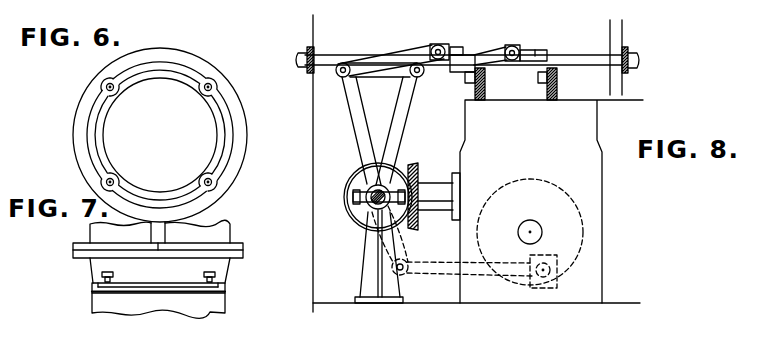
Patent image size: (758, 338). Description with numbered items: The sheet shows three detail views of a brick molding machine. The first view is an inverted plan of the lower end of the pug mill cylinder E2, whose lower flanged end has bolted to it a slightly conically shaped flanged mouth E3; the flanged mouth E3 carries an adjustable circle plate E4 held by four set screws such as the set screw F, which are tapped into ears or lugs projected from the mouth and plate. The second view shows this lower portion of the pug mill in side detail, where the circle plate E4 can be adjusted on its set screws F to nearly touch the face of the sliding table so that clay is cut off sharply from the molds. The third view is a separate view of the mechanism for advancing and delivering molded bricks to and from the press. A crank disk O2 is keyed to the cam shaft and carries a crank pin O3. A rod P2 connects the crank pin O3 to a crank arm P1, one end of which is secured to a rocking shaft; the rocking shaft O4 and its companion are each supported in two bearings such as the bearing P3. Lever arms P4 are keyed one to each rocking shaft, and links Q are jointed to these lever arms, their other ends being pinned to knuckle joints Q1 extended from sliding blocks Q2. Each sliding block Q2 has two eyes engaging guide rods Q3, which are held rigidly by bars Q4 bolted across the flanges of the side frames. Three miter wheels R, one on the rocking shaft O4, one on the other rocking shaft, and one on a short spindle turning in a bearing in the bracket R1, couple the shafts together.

In FIG. 7, the pug mill cylinder E2 is at (218, 236).
In FIG. 6, the flanged mouth E3 is at (222, 128).
In FIG. 7, the flanged mouth E3 is at (217, 267).
In FIG. 7, the adjustable circle plate E4 is at (213, 293).
In FIG. 7, the set screw F is at (113, 277).
In FIG. 8, the link Q is at (410, 53).
In FIG. 8, the knuckle joint Q1 is at (440, 47).
In FIG. 8, the sliding block Q2 is at (485, 92).
In FIG. 8, the guide rod Q3 is at (383, 60).
In FIG. 8, the bar Q4 is at (309, 50).
In FIG. 8, the crank arm P1 is at (395, 245).
In FIG. 8, the rod P2 is at (433, 268).
In FIG. 8, the bearing P3 is at (372, 280).
In FIG. 8, the lever arm P4 is at (360, 142).
In FIG. 8, the miter wheel R is at (355, 192).
In FIG. 8, the bracket R1 is at (428, 199).
In FIG. 8, the crank disk O2 is at (545, 190).
In FIG. 8, the crank pin O3 is at (548, 272).
In FIG. 8, the rocking shaft O4 is at (375, 207).